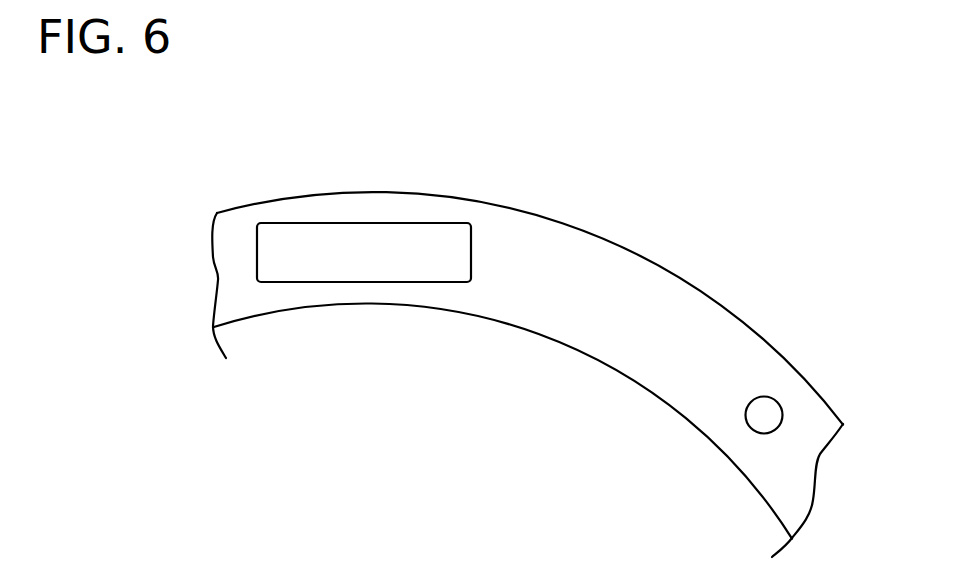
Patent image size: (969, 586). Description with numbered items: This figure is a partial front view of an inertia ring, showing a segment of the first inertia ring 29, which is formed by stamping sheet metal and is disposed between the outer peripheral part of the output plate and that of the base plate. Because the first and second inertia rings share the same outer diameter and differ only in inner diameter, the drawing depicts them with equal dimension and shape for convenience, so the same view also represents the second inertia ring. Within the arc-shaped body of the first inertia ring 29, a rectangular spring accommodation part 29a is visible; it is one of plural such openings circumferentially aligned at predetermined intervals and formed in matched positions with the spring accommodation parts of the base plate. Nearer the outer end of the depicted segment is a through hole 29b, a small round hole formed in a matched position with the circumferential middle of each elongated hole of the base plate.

The first inertia ring 29 is at (611, 236).
The spring accommodation part 29a is at (378, 226).
The through hole 29b is at (762, 419).